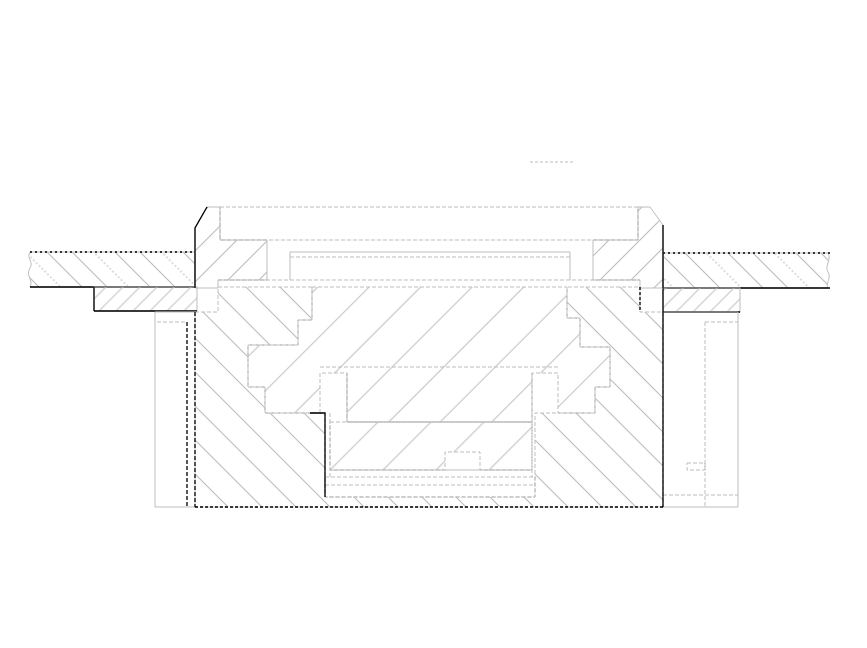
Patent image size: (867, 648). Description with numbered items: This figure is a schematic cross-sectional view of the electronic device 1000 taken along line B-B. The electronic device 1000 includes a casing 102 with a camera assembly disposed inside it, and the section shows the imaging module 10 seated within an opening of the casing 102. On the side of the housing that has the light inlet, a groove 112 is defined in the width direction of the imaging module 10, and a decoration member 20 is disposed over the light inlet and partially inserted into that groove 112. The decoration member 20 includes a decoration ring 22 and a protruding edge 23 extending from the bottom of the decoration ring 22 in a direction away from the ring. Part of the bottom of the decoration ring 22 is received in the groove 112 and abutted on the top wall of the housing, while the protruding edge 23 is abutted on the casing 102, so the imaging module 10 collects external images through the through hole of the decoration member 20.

The electronic device 1000 is at (230, 93).
The imaging module 10 is at (304, 504).
The decoration member 20 is at (664, 242).
The decoration ring 22 is at (205, 232).
The protruding edge 23 is at (127, 302).
The casing 102 is at (90, 265).
The groove 112 is at (640, 308).